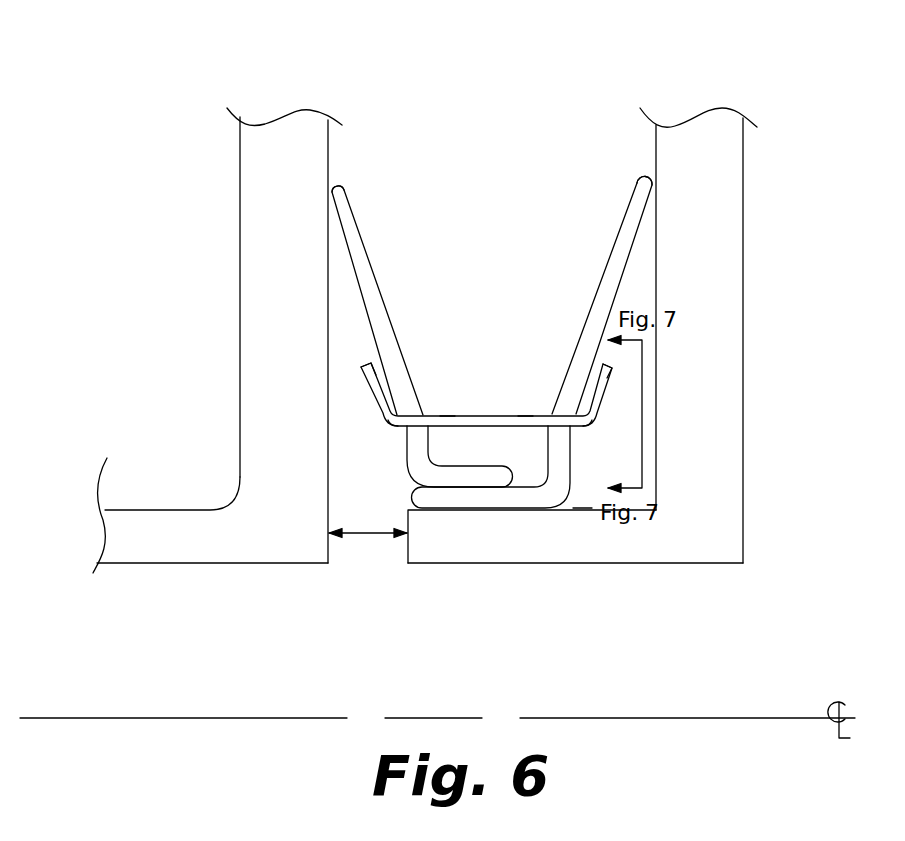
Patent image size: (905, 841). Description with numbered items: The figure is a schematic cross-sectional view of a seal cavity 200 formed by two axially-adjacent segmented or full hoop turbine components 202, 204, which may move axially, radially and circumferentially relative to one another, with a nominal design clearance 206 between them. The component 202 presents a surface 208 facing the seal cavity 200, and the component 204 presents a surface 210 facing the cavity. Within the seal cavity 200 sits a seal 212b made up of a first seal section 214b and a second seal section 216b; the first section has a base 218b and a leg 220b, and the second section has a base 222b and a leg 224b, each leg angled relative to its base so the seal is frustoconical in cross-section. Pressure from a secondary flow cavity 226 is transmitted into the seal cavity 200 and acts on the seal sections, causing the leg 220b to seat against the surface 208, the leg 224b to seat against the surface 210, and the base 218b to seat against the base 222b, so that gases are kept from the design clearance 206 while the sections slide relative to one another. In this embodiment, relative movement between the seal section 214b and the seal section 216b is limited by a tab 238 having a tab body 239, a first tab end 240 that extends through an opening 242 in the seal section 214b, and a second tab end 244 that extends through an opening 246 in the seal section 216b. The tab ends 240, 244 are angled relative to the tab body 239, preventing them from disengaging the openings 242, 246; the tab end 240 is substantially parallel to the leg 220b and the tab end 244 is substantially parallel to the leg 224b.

The seal cavity 200 is at (522, 118).
The turbine component 202 is at (207, 563).
The turbine component 204 is at (583, 563).
The nominal design clearance 206 is at (367, 535).
The surface 208 is at (330, 152).
The surface 210 is at (656, 152).
The seal 212b is at (492, 278).
The seal section 214b is at (403, 278).
The seal section 216b is at (579, 277).
The base 218b is at (485, 413).
The leg 220b is at (357, 232).
The base 222b is at (412, 497).
The leg 224b is at (620, 223).
The secondary flow cavity 226 is at (495, 50).
The tab 238 is at (447, 415).
The tab body 239 is at (533, 393).
The first tab end 240 is at (366, 377).
The opening 242 is at (392, 436).
The second tab end 244 is at (610, 380).
The opening 246 is at (583, 437).